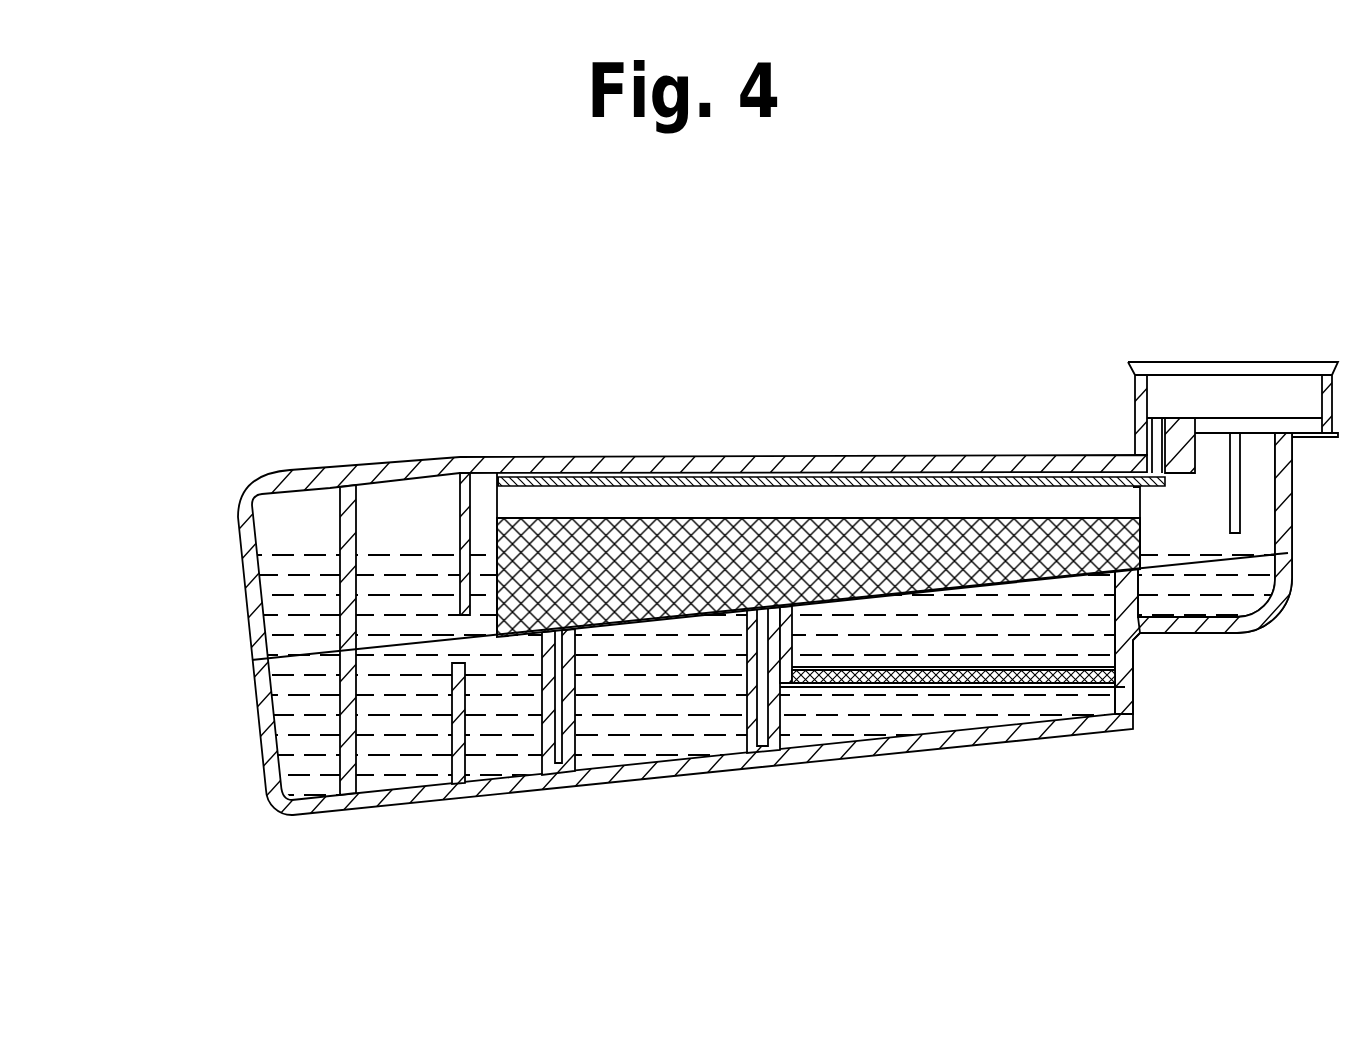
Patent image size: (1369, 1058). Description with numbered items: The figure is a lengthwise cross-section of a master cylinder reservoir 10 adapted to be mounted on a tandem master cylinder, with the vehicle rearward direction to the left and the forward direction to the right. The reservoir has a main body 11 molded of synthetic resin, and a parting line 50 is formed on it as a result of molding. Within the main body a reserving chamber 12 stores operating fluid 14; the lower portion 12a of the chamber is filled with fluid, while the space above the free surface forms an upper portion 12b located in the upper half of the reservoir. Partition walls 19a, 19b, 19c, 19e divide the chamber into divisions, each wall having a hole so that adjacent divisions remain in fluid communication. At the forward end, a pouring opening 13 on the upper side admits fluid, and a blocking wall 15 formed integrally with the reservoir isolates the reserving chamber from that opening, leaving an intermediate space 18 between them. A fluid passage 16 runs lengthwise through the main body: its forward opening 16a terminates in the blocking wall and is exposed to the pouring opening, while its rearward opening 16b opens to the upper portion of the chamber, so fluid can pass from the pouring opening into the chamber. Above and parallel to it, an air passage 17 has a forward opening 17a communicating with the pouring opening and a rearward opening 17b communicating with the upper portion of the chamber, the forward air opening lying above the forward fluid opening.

The master cylinder reservoir 10 is at (765, 556).
The main body 11 is at (1023, 737).
The reserving chamber 12 is at (396, 624).
The lower portion of the reserving chamber 12a is at (497, 737).
The upper portion of the reserving chamber 12b is at (407, 500).
The pouring opening 13 is at (1272, 397).
The operating fluid 14 is at (703, 705).
The blocking wall 15 is at (1135, 500).
The fluid passage 16 is at (660, 497).
The forward opening of the fluid passage 16a is at (1127, 458).
The rearward opening of the fluid passage 16b is at (510, 505).
The air passage 17 is at (998, 458).
The forward opening of the air passage 17a is at (1160, 427).
The rearward opening of the air passage 17b is at (513, 473).
The intermediate space 18 is at (1218, 576).
The partition wall 19a is at (338, 762).
The partition wall 19b is at (556, 752).
The partition wall 19c is at (580, 737).
The partition wall 19e is at (795, 718).
The parting line 50 is at (290, 655).